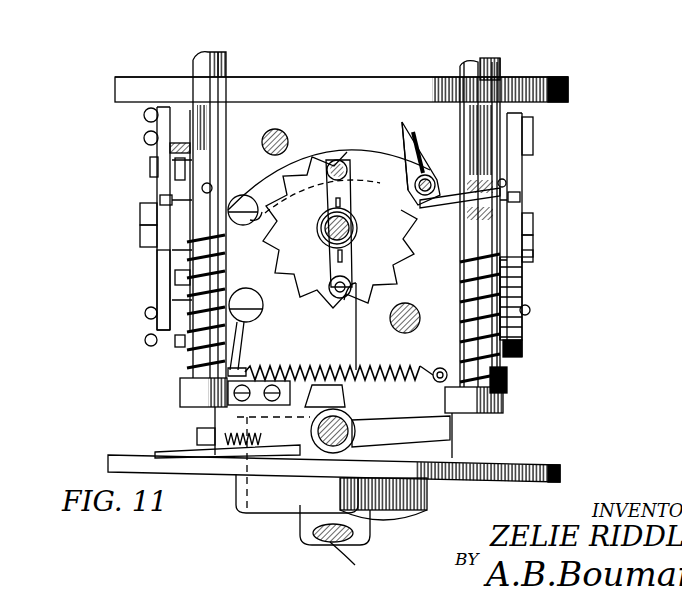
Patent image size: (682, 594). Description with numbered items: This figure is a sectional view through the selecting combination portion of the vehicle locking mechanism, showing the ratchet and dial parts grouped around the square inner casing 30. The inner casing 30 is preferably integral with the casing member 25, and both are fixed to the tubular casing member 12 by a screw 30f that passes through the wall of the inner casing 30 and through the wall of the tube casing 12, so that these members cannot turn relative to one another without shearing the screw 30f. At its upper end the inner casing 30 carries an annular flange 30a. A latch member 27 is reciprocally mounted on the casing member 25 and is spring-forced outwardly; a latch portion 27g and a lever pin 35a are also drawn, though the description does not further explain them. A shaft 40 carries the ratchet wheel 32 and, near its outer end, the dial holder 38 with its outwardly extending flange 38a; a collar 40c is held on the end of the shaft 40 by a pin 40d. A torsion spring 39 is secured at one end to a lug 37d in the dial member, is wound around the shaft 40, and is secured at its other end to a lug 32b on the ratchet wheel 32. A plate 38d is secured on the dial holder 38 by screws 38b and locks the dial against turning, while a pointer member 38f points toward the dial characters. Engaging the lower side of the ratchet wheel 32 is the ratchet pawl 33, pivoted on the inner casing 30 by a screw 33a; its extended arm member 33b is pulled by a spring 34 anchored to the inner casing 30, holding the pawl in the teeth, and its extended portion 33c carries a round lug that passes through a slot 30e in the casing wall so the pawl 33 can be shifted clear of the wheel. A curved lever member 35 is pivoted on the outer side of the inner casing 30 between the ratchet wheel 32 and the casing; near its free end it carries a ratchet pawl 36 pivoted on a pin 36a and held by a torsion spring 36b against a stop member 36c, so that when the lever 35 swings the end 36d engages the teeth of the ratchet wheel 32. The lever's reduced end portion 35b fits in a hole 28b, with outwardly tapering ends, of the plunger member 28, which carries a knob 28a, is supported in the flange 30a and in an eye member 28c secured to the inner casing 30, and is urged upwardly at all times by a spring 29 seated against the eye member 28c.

The tubular casing member 12 is at (430, 497).
The casing member 25 is at (120, 465).
The latch member 27 is at (452, 442).
The bracket arm 27g is at (312, 437).
The plunger member 28 is at (200, 60).
The knob 28a is at (533, 255).
The hole 28b is at (202, 188).
The eye member 28c is at (180, 393).
The spring 29 is at (187, 367).
The inner casing 30 is at (297, 112).
The annular flange 30a is at (130, 88).
The slot 30e is at (340, 397).
The screw 30f is at (197, 432).
The ratchet wheel 32 is at (317, 185).
The lug 32b is at (329, 285).
The ratchet pawl 33 is at (358, 331).
The screw 33a is at (245, 296).
The extended arm member 33b is at (246, 353).
The extended portion 33c is at (367, 363).
The spring 34 is at (414, 382).
The lever member 35 is at (355, 143).
The disc pin 35a is at (238, 196).
The reduced end portion 35b is at (160, 200).
The ratchet pawl 36 is at (505, 168).
The pin 36a is at (408, 147).
The torsion spring 36b is at (403, 125).
The stop member 36c is at (420, 135).
The end 36d is at (403, 140).
The lug 37d is at (337, 158).
The dial holder 38 is at (157, 323).
The outwardly extending flange 38a is at (146, 313).
The screws 38b is at (146, 340).
The plate 38d is at (522, 295).
The pointer member 38f is at (146, 118).
The torsion spring 39 is at (412, 237).
The shaft 40 is at (357, 235).
The collar 40c is at (140, 215).
The pin 40d is at (325, 220).